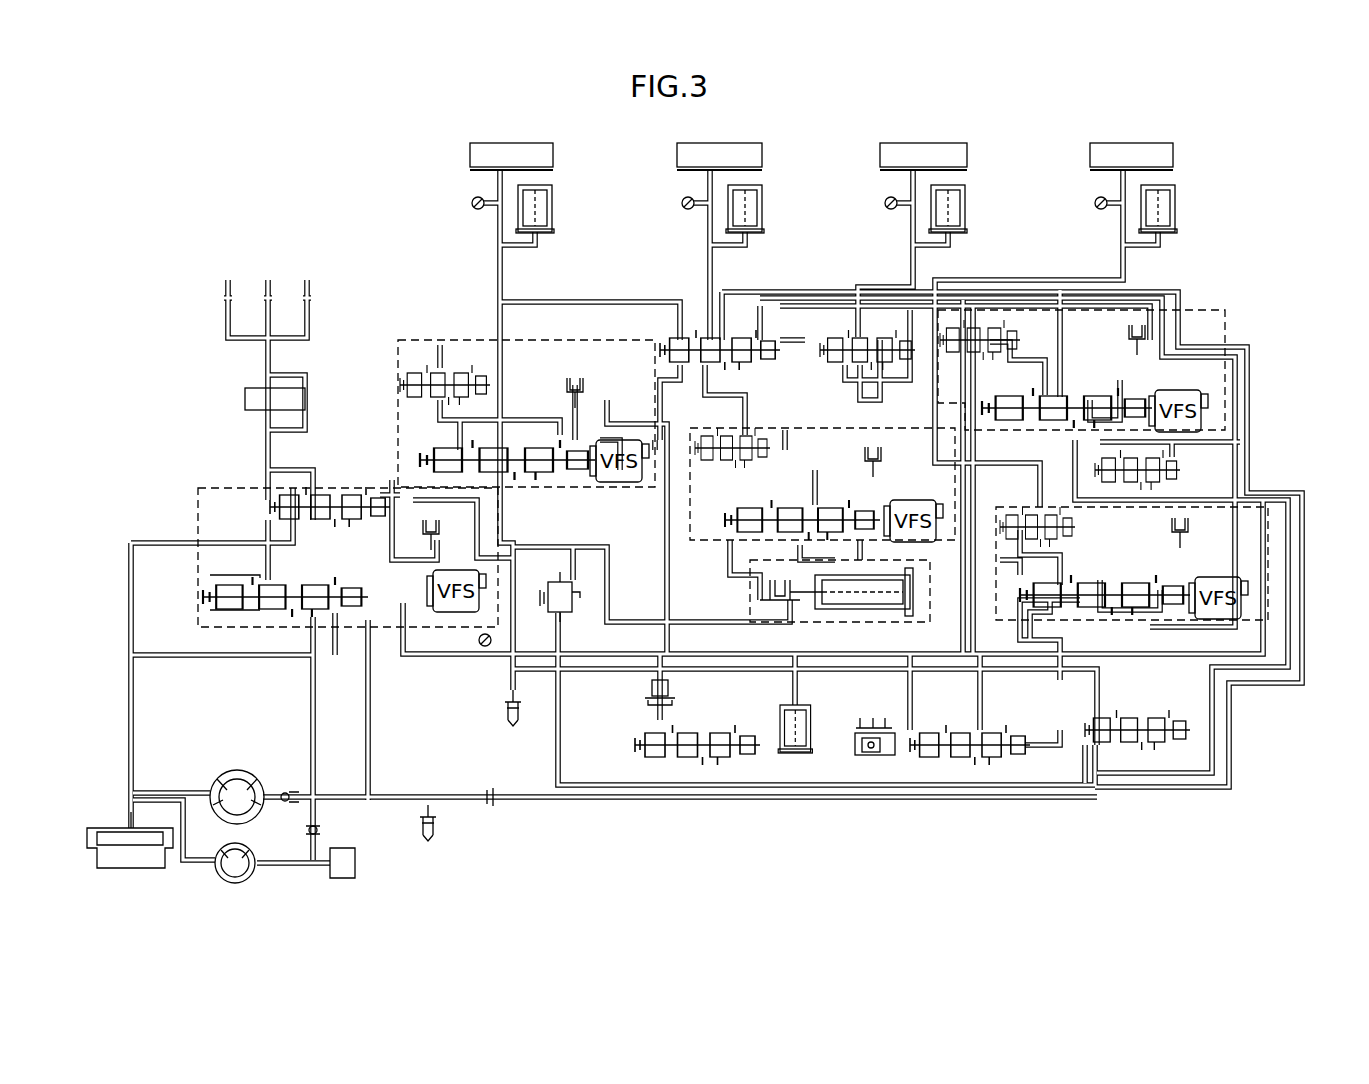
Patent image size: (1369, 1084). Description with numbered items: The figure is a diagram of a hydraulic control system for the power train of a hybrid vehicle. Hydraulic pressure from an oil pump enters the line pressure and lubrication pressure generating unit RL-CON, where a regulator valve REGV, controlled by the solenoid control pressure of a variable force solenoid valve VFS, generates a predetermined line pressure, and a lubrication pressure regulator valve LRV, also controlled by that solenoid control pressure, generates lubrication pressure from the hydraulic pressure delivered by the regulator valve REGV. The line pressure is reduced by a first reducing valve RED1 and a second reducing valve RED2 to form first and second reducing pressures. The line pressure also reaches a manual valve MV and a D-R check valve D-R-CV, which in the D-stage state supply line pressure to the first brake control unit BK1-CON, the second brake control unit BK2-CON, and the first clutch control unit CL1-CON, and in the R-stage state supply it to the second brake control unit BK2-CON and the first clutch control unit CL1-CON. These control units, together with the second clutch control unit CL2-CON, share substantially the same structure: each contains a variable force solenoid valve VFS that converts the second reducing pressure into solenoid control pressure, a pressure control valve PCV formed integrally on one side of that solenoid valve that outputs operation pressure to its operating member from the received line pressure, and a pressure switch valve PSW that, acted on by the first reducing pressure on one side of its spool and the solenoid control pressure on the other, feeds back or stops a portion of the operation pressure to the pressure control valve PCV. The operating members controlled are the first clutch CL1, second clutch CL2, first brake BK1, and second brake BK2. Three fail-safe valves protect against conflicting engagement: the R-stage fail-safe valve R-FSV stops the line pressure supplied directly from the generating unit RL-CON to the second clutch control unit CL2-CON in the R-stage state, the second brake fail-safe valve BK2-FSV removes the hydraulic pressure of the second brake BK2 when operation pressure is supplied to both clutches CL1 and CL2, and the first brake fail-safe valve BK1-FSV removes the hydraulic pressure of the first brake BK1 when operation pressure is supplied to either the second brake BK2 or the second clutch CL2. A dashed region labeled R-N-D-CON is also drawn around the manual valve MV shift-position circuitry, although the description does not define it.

The first clutch CL1 is at (511, 156).
The second brake BK2 is at (719, 156).
The first brake BK1 is at (923, 156).
The second clutch CL2 is at (1131, 156).
The second brake fail-safe valve BK2-FSV is at (710, 328).
The first brake fail-safe valve BK1-FSV is at (848, 328).
The R-stage fail-safe valve R-FSV is at (1188, 467).
The pressure switch valve PSW is at (437, 362).
The pressure control valve PCV is at (524, 484).
The variable force solenoid valve VFS is at (837, 504).
The first clutch control unit CL1-CON is at (412, 338).
The second brake control unit BK2-CON is at (713, 428).
The second clutch control unit CL2-CON is at (1213, 312).
The first brake control unit BK1-CON is at (1263, 505).
The line pressure and lubrication pressure generating unit RL-CON is at (215, 488).
The R-N-D control unit R-N-D-CON is at (835, 625).
The lubrication pressure regulator valve LRV is at (333, 488).
The regulator valve REGV is at (238, 628).
The D-R check valve D-R-CV is at (577, 630).
The second reducing valve RED2 is at (699, 775).
The first reducing valve RED1 is at (1141, 760).
The manual valve MV is at (985, 775).